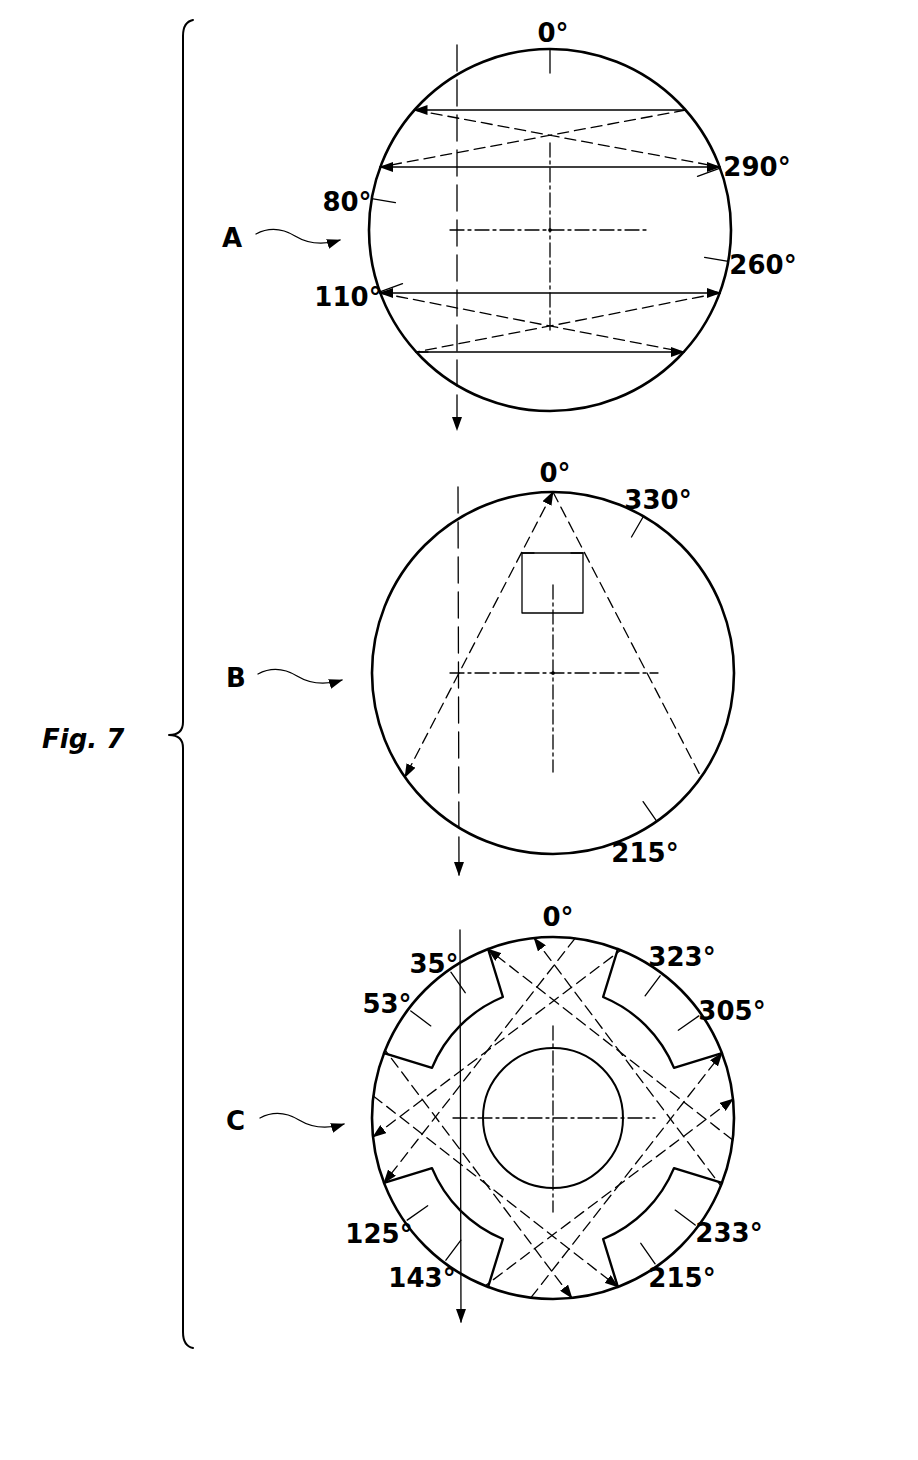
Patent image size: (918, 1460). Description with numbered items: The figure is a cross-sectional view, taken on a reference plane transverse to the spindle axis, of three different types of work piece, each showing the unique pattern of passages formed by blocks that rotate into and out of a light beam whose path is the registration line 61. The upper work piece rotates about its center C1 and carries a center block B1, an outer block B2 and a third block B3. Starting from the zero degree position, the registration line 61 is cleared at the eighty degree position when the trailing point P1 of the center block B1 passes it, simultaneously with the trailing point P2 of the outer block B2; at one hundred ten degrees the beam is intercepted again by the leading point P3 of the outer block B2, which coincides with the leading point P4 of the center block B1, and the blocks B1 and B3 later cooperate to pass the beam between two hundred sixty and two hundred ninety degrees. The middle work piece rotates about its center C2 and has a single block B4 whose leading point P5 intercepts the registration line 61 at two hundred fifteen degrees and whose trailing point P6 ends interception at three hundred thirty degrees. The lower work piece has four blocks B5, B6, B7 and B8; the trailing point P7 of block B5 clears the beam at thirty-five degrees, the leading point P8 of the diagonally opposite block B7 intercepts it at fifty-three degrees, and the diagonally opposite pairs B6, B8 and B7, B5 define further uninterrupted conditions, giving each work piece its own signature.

The registration line 61 is at (456, 66).
The center block B1 is at (690, 216).
The outer block B2 is at (583, 383).
The third block B3 is at (630, 90).
The single block B4 is at (572, 585).
The block B5 is at (437, 1012).
The block B6 is at (431, 1228).
The diagonally opposite block B7 is at (699, 1196).
The block B8 is at (666, 1004).
The trailing point P1 is at (380, 294).
The trailing point P2 is at (685, 353).
The leading point P3 is at (416, 353).
The leading point P4 is at (720, 294).
The leading point P5 is at (583, 553).
The trailing point P6 is at (522, 553).
The trailing point P7 is at (384, 1053).
The leading point P8 is at (619, 1287).
The center C1 is at (550, 230).
The center C2 is at (553, 673).